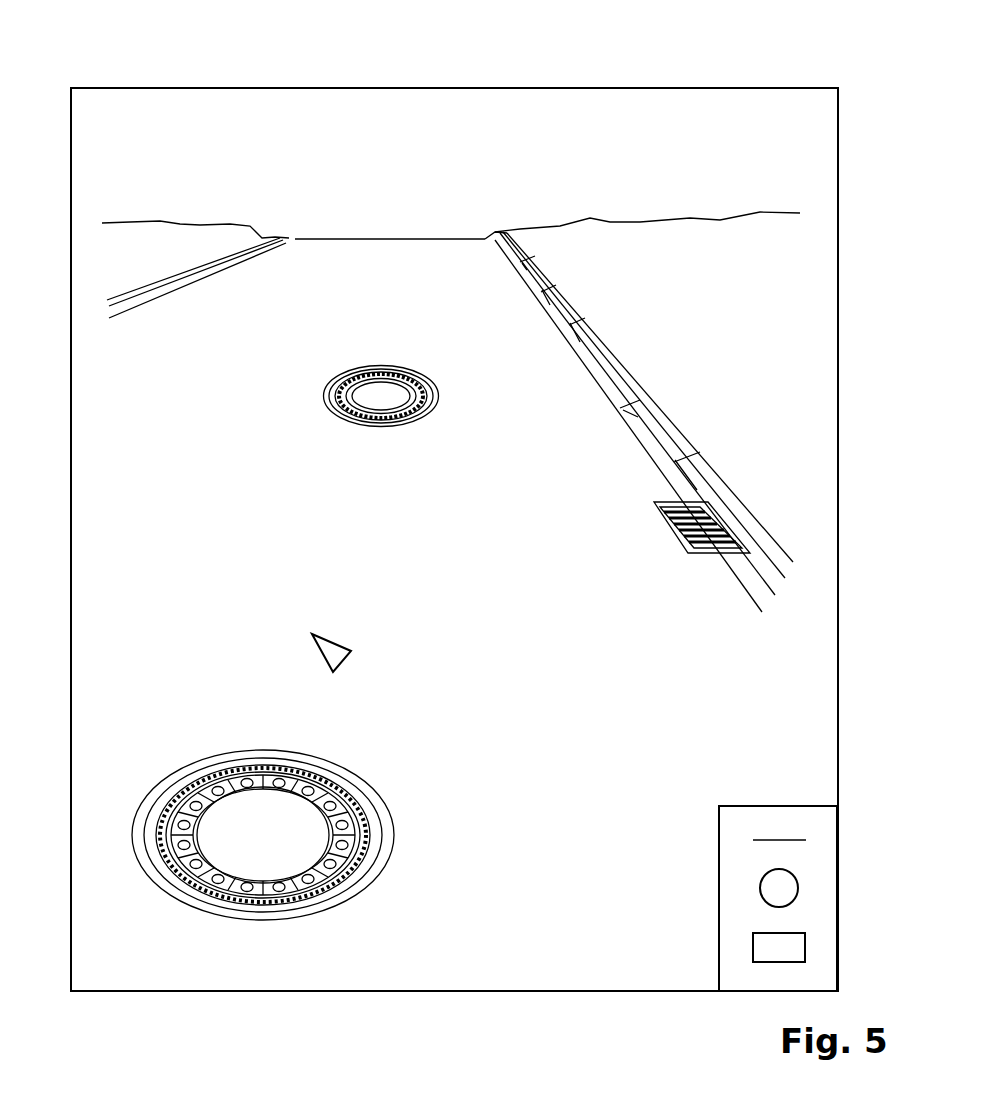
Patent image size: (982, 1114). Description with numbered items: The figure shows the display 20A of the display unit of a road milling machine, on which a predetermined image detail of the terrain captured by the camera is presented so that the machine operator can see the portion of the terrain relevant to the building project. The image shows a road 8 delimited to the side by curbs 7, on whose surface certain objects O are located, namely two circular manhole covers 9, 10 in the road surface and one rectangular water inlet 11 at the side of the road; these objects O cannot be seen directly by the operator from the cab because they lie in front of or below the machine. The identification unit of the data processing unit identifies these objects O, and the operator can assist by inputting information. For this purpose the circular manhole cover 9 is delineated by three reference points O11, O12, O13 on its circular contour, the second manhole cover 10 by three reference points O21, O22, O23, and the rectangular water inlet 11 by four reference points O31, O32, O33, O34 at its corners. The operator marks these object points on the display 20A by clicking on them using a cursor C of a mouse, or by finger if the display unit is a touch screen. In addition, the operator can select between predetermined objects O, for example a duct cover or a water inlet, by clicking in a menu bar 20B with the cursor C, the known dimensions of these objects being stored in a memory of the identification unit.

The display 20A is at (608, 84).
The menu bar 20B is at (773, 806).
The road 8 is at (445, 226).
The curbs 7 is at (200, 269).
The manhole cover 9 is at (269, 833).
The manhole cover 10 is at (366, 397).
The water inlet 11 is at (684, 489).
The objects O is at (807, 869).
The reference point O11 is at (192, 892).
The reference point O12 is at (377, 820).
The reference point O13 is at (218, 768).
The reference point O21 is at (403, 422).
The reference point O22 is at (407, 375).
The reference point O23 is at (330, 397).
The reference point O31 is at (742, 538).
The reference point O32 is at (707, 505).
The reference point O33 is at (657, 503).
The reference point O34 is at (682, 550).
The cursor C is at (333, 645).